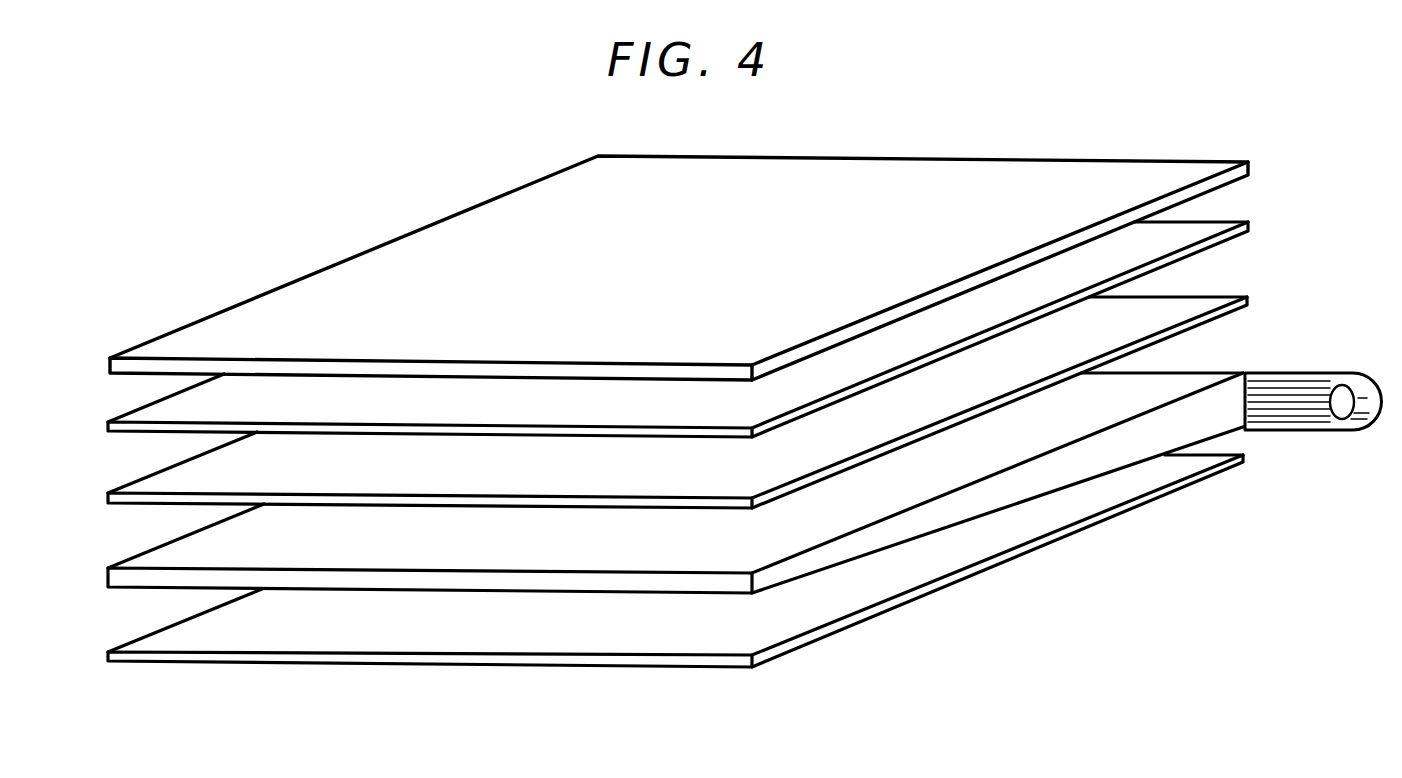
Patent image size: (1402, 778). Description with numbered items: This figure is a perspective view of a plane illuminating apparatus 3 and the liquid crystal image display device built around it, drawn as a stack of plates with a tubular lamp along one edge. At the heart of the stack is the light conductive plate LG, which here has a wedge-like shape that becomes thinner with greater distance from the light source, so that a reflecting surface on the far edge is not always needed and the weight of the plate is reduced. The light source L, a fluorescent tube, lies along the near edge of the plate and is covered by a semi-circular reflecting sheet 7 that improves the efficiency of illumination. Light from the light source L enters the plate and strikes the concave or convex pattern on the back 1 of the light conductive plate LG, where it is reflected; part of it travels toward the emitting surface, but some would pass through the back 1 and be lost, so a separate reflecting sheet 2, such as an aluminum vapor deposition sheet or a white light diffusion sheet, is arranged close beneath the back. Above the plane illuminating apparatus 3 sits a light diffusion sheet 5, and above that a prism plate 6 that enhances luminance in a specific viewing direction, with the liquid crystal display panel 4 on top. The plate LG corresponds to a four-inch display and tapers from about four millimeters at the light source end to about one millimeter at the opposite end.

The back of the light conductive plate 1 is at (790, 582).
The reflecting sheet 2 is at (963, 578).
The plane illuminating apparatus 3 is at (98, 562).
The liquid crystal display panel 4 is at (887, 157).
The light diffusion sheet 5 is at (1240, 296).
The prism plate 6 is at (1240, 221).
The semi-circular reflecting sheet 7 is at (1333, 372).
The light source L is at (1302, 428).
The light conductive plate LG is at (453, 592).